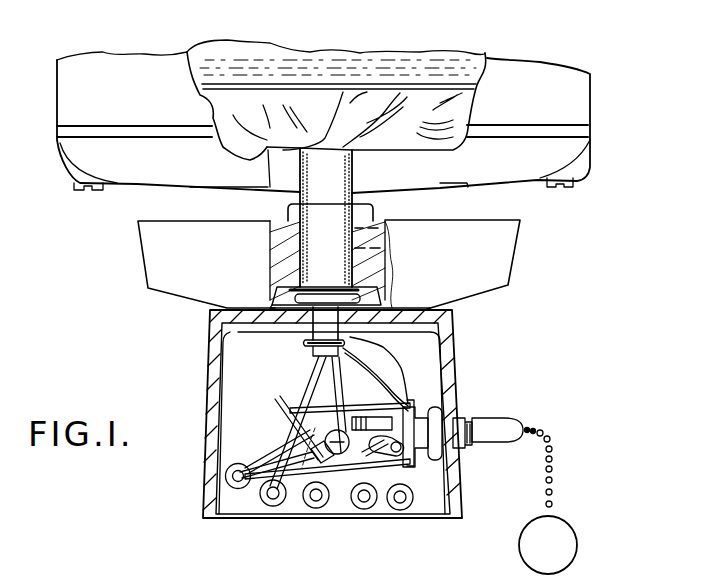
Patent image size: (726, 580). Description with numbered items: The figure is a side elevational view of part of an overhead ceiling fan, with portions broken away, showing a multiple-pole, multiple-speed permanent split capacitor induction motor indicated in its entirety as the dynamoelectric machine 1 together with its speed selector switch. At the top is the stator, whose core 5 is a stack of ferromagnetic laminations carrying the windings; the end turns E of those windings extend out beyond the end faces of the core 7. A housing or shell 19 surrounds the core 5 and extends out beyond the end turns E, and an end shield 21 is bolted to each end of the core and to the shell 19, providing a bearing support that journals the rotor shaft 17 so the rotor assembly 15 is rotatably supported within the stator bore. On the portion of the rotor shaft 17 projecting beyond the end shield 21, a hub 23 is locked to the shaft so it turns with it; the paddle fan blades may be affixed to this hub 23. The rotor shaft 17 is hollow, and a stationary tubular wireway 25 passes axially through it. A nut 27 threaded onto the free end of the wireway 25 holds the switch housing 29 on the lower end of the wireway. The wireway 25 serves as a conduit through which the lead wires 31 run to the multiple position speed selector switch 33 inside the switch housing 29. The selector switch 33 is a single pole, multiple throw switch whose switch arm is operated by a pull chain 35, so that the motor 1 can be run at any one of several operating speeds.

The dynamoelectric machine 1 is at (621, 66).
The core 5 is at (348, 72).
The core 7 is at (236, 84).
The rotor assembly 15 is at (352, 173).
The rotor shaft 17 is at (320, 254).
The housing or shell 19 is at (567, 102).
The end shield 21 is at (533, 184).
The hub 23 is at (497, 290).
The wireway 25 is at (466, 335).
The nut 27 is at (396, 387).
The switch housing 29 is at (209, 468).
The lead wires 31 is at (295, 490).
The speed selector switch 33 is at (383, 474).
The pull chain 35 is at (555, 434).
The end turns E is at (268, 147).